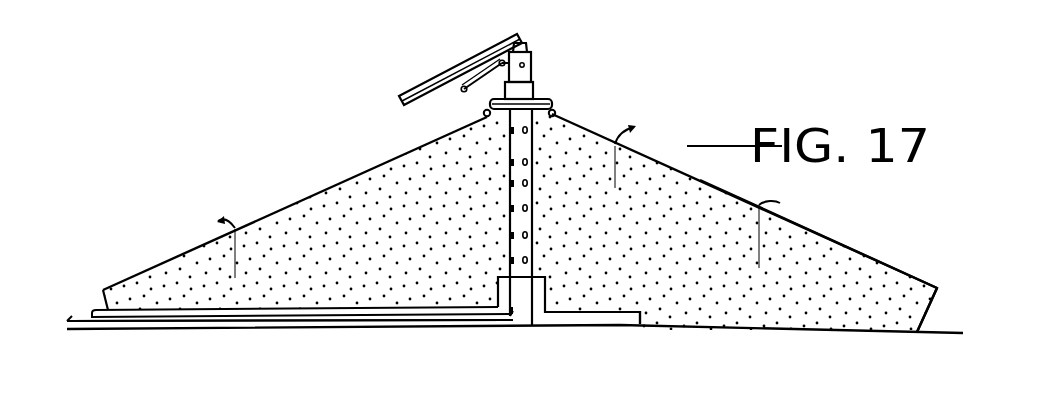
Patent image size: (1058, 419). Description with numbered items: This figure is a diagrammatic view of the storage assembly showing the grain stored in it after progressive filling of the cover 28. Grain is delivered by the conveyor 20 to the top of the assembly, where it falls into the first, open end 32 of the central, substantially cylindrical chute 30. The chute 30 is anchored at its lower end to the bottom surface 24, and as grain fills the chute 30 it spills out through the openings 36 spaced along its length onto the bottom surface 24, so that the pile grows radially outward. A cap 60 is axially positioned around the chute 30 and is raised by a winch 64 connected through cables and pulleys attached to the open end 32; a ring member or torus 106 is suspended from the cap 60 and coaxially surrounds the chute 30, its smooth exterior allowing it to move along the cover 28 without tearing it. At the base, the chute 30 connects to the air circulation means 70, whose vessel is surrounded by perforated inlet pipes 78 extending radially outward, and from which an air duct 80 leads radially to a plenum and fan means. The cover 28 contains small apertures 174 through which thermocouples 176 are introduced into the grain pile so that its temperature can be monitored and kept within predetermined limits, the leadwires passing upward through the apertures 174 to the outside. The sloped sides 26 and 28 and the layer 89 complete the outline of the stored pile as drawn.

The conveyor 20 is at (421, 84).
The bottom surface 24 is at (782, 330).
The side slope of pile 26 is at (933, 307).
The cover 28 is at (843, 214).
The chute 30 is at (542, 62).
The first open end 32 is at (527, 45).
The openings 36 is at (528, 183).
The cap 60 is at (541, 90).
The winch 64 is at (467, 96).
The air circulation means 70 is at (497, 289).
The inlet pipes 78 is at (618, 312).
The air duct 80 is at (98, 310).
The ground sheet 89 is at (73, 320).
The ring member or torus 106 is at (556, 106).
The apertures 174 is at (617, 145).
The thermocouples 176 is at (615, 167).